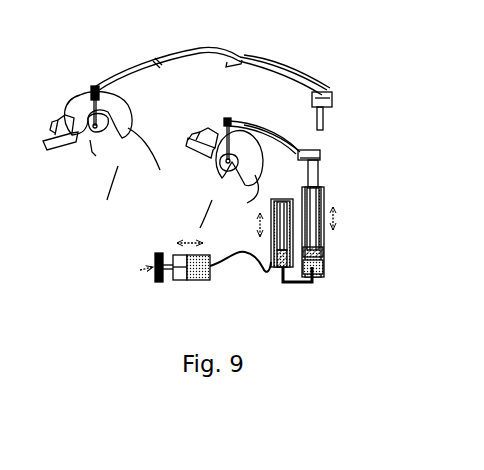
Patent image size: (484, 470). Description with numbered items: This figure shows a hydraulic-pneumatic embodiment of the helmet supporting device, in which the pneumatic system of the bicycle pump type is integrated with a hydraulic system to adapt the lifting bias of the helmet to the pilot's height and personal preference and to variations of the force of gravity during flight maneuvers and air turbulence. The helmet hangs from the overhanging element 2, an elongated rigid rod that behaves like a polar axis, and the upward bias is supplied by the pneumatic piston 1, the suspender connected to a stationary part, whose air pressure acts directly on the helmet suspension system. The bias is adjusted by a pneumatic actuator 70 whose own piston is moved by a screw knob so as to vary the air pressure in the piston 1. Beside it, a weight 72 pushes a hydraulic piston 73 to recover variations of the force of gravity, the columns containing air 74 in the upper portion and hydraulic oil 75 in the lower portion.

The piston 1 is at (326, 197).
The overhanging element 2 is at (287, 63).
The actuator 70 is at (151, 272).
The weight 72 is at (268, 199).
The hydraulic piston 73 is at (270, 251).
The air 74 is at (325, 253).
The hydraulic oil 75 is at (323, 266).